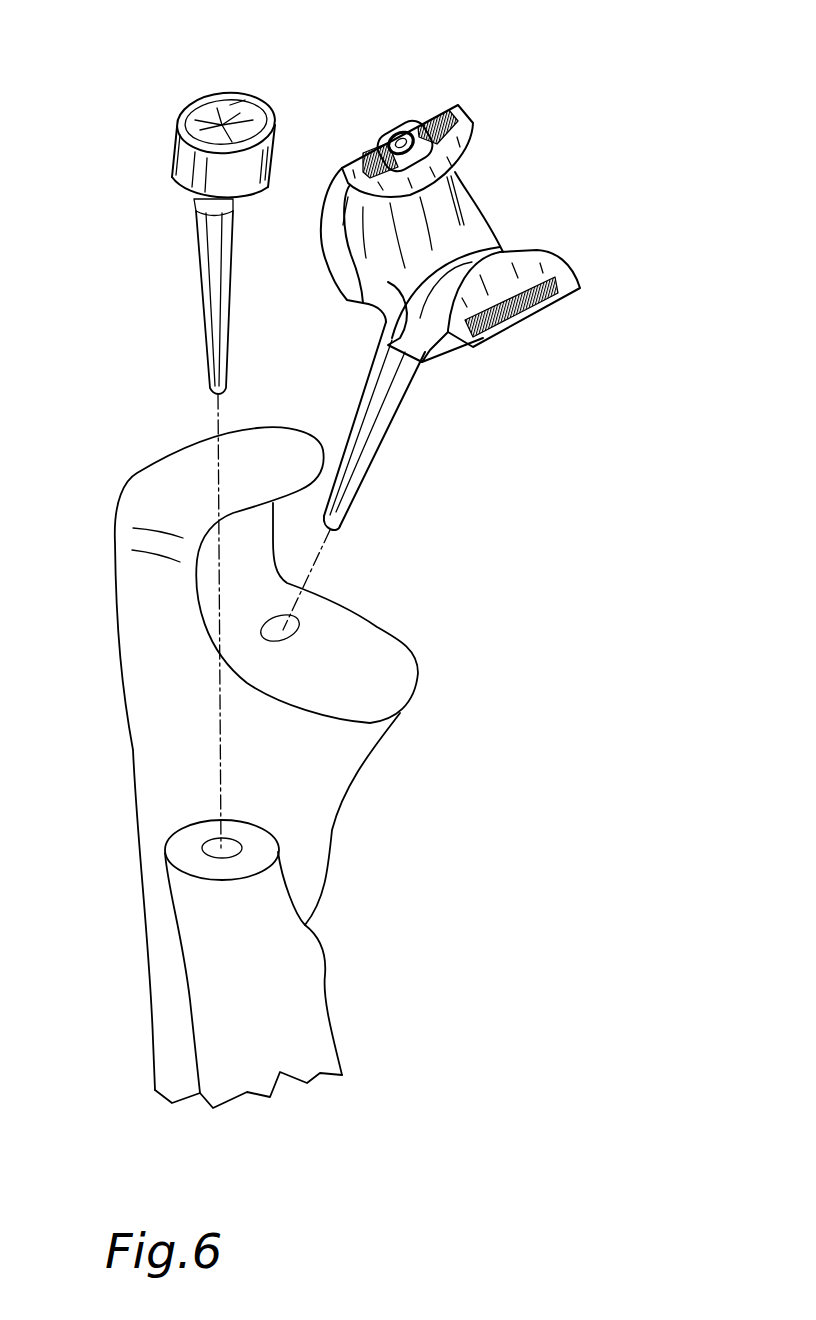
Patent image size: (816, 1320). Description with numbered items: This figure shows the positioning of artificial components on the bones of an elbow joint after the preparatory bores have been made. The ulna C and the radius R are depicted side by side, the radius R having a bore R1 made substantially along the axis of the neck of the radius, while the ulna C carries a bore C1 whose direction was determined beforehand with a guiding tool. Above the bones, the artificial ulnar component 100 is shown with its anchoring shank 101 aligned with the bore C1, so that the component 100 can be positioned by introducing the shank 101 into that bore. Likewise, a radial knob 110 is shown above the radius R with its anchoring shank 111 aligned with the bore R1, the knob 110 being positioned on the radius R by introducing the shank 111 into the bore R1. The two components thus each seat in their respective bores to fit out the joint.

The artificial ulnar component 100 is at (525, 155).
The anchoring shank 101 is at (380, 407).
The radial knob 110 is at (170, 165).
The anchoring shank 111 is at (205, 277).
The ulna C is at (318, 835).
The bore C1 is at (292, 626).
The radius R is at (317, 1020).
The bore R1 is at (226, 842).